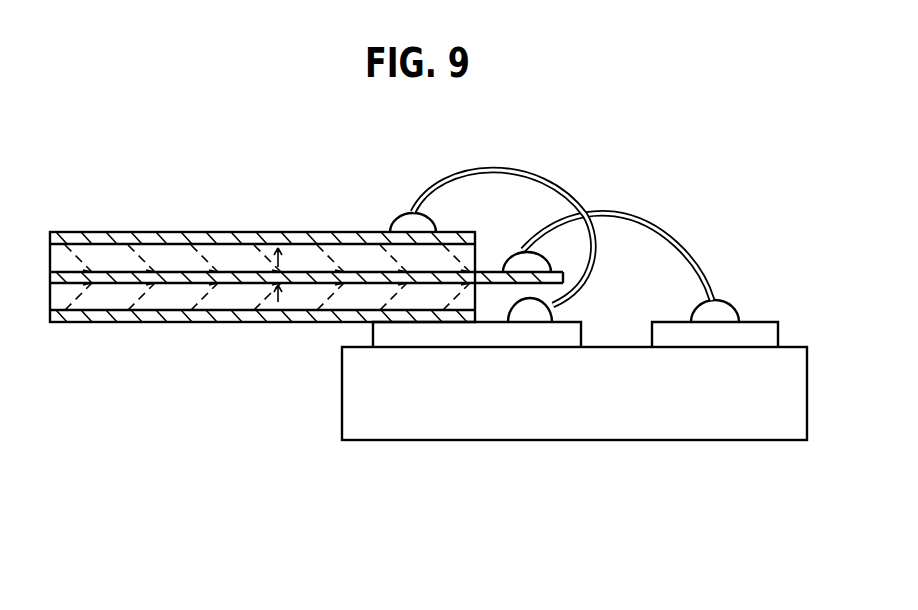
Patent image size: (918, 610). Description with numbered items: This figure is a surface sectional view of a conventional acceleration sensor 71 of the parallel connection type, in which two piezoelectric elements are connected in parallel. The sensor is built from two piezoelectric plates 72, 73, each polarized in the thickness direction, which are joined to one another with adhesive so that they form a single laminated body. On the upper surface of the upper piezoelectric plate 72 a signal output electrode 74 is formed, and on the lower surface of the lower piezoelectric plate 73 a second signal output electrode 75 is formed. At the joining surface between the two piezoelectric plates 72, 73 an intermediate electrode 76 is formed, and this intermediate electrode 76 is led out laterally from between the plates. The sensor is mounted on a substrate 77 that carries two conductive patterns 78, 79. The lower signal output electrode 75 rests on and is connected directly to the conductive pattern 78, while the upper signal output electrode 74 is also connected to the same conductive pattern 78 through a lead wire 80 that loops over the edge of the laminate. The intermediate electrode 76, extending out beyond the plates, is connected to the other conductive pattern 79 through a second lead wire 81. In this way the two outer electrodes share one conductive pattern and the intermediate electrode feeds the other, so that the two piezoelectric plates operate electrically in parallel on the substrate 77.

The acceleration sensor 71 is at (148, 142).
The piezoelectric plate 72 is at (172, 253).
The piezoelectric plate 73 is at (160, 298).
The signal output electrode 74 is at (97, 240).
The signal output electrode 75 is at (119, 312).
The intermediate electrode 76 is at (240, 280).
The substrate 77 is at (530, 440).
The conductive pattern 78 is at (475, 335).
The conductive pattern 79 is at (730, 333).
The lead wire 80 is at (570, 189).
The lead wire 81 is at (687, 243).